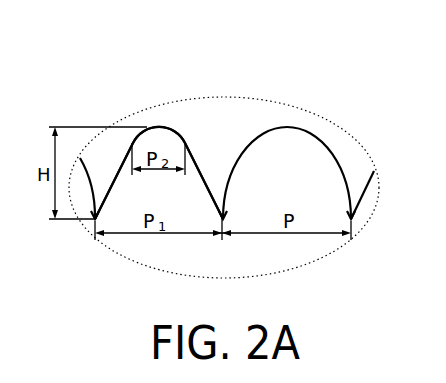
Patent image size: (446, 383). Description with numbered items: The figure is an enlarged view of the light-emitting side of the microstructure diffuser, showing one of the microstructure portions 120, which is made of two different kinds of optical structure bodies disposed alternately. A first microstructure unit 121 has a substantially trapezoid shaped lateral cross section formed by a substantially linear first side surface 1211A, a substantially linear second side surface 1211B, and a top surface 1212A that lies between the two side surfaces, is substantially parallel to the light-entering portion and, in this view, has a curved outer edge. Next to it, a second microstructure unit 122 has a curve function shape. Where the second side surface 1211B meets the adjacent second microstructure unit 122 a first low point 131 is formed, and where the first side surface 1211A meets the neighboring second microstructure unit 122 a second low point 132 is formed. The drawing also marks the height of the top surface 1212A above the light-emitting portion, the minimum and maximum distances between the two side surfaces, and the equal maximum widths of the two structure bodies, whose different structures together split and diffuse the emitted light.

The microstructure portion 120 is at (216, 159).
The first microstructure unit 121 is at (143, 128).
The top surface 1212A is at (153, 138).
The first side surface 1211A is at (117, 178).
The second side surface 1211B is at (200, 167).
The second microstructure unit 122 is at (285, 157).
The first low point 131 is at (218, 222).
The second low point 132 is at (95, 220).